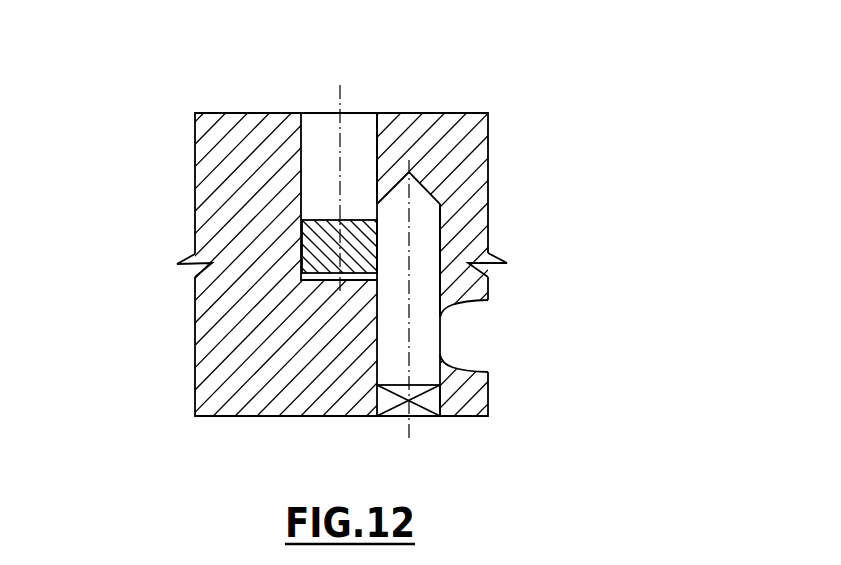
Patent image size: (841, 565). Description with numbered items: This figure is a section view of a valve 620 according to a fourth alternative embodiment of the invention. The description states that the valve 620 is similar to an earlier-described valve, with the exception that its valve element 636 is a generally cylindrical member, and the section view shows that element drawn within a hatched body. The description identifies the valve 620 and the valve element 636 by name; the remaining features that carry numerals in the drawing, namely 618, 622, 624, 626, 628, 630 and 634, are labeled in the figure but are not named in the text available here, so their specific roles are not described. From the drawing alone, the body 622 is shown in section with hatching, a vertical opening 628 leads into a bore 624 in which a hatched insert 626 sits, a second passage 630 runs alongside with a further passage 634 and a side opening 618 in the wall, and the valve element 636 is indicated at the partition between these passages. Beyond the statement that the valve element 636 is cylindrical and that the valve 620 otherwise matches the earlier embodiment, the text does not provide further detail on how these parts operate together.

The side port 618 is at (468, 337).
The valve 620 is at (553, 406).
The housing body 622 is at (290, 383).
The bore 624 is at (315, 173).
The seat insert 626 is at (303, 260).
The bore opening 628 is at (321, 113).
The channel 630 is at (376, 212).
The passage 634 is at (422, 240).
The valve element 636 is at (317, 154).